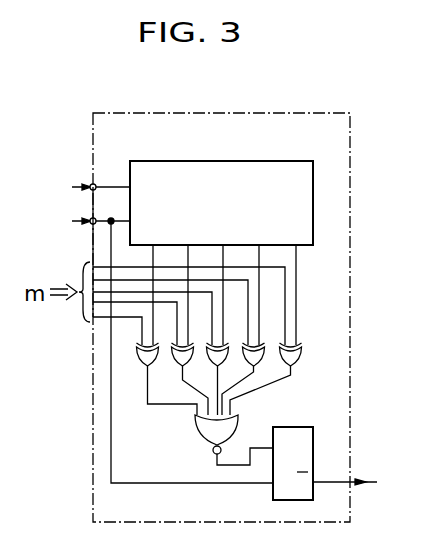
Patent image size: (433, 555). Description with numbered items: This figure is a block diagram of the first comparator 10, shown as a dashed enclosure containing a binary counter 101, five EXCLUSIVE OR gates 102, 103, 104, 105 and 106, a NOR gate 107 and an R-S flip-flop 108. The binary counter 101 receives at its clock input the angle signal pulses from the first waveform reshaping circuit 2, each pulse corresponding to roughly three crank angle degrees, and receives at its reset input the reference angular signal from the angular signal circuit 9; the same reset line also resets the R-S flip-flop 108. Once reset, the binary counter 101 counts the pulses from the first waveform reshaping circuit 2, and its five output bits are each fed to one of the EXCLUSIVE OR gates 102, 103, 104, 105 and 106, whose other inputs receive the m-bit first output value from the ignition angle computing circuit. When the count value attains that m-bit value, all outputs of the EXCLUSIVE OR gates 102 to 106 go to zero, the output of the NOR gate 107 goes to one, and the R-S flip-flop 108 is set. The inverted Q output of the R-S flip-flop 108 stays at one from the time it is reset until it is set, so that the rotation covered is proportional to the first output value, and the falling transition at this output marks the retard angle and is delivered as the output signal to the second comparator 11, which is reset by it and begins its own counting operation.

The first comparator 10 is at (350, 132).
The binary counter 101 is at (270, 167).
The first waveform reshaping circuit 2 is at (91, 189).
The angular signal circuit 9 is at (162, 347).
The EXCLUSIVE OR gate 102 is at (138, 356).
The EXCLUSIVE OR gate 103 is at (175, 359).
The EXCLUSIVE OR gate 104 is at (226, 347).
The EXCLUSIVE OR gate 105 is at (260, 362).
The EXCLUSIVE OR gate 106 is at (302, 355).
The NOR gate 107 is at (206, 441).
The R-S flip-flop 108 is at (300, 420).
The second comparator 11 is at (356, 484).